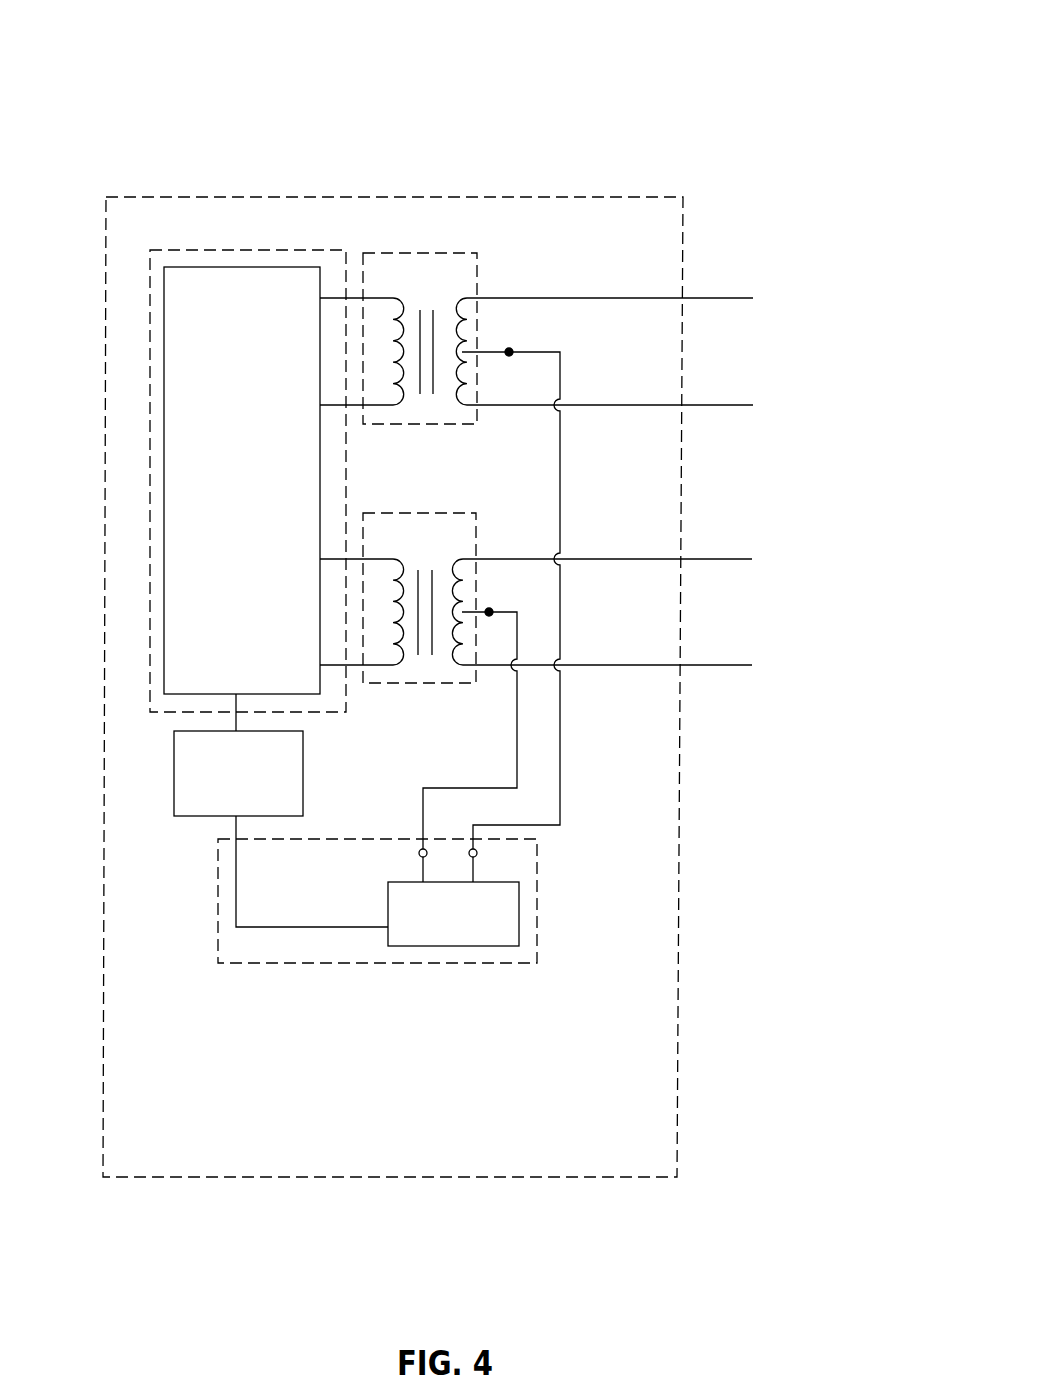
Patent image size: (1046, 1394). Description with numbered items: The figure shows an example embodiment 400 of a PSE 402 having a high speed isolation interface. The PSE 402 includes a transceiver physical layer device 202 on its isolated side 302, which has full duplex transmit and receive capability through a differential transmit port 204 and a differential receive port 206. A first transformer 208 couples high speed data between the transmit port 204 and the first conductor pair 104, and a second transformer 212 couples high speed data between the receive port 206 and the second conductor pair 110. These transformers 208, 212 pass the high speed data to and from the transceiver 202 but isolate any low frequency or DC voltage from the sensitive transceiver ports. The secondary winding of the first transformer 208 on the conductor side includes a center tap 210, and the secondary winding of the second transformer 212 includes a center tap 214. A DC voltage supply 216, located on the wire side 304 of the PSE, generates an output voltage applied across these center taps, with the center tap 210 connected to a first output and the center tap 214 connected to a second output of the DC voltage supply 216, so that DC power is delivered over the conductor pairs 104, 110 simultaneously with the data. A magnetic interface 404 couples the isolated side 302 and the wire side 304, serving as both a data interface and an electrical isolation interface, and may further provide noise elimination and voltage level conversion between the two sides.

The example embodiment 400 is at (863, 32).
The PSE 402 is at (448, 170).
The isolated side 302 is at (149, 432).
The transceiver physical layer device (PHY) 202 is at (242, 480).
The differential transmit port 204 is at (320, 350).
The differential receive port 206 is at (320, 592).
The first transformer 208 is at (420, 338).
The center tap 210 is at (511, 351).
The second transformer 212 is at (419, 598).
The center tap 214 is at (491, 611).
The DC voltage supply 216 is at (388, 910).
The wire side 304 is at (483, 963).
The magnetic interface 404 is at (304, 760).
The first conductor pair 104 is at (704, 327).
The second conductor pair 110 is at (703, 592).